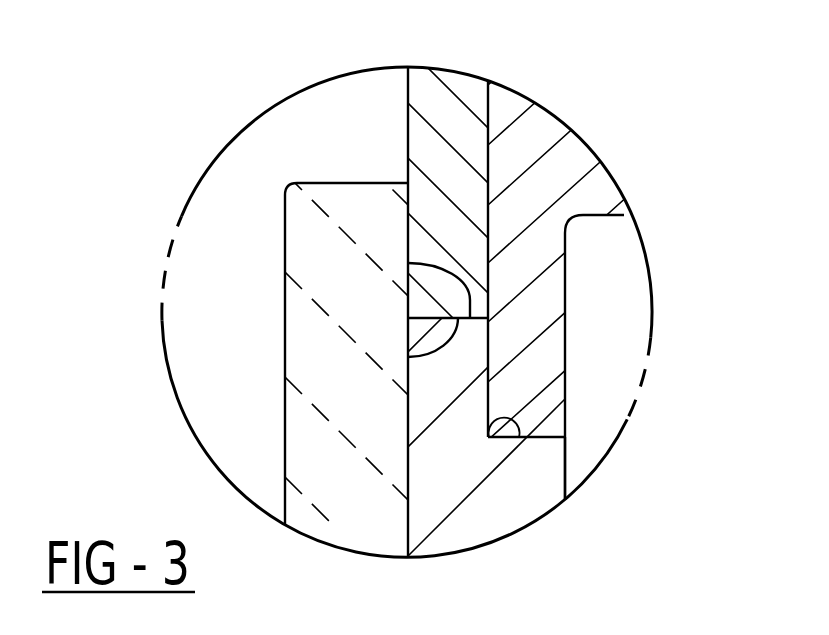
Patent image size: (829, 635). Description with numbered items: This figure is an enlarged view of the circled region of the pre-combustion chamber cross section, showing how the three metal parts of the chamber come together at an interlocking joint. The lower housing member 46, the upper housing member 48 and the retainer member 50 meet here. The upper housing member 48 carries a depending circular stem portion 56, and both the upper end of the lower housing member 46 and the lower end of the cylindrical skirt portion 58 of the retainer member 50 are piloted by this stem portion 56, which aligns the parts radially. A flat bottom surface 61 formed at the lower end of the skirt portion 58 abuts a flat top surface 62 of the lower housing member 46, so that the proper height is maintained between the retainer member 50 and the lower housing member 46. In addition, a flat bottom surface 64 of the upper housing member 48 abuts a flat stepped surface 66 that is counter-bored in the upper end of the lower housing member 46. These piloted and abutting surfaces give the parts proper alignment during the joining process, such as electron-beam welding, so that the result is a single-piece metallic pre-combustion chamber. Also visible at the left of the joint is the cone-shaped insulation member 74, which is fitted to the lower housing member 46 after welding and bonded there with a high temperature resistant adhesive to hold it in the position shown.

The lower housing member 46 is at (567, 472).
The upper housing member 48 is at (565, 259).
The retainer member 50 is at (408, 117).
The stem portion 56 is at (547, 285).
The skirt portion 58 is at (433, 213).
The flat bottom surface 61 is at (410, 357).
The flat top surface 62 is at (408, 263).
The flat bottom surface 64 is at (537, 438).
The flat stepped surface 66 is at (488, 438).
The cone-shaped insulation member 74 is at (298, 440).